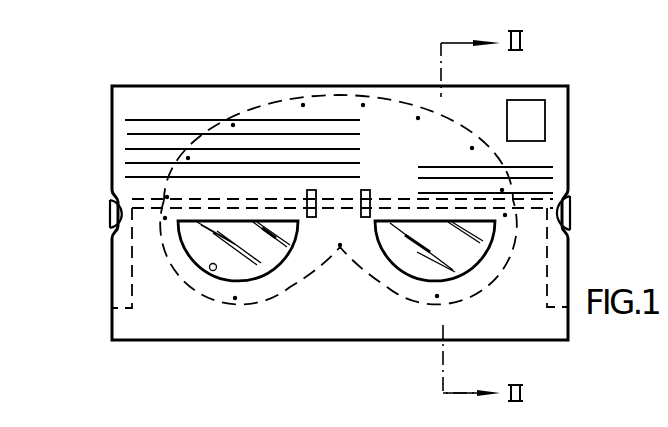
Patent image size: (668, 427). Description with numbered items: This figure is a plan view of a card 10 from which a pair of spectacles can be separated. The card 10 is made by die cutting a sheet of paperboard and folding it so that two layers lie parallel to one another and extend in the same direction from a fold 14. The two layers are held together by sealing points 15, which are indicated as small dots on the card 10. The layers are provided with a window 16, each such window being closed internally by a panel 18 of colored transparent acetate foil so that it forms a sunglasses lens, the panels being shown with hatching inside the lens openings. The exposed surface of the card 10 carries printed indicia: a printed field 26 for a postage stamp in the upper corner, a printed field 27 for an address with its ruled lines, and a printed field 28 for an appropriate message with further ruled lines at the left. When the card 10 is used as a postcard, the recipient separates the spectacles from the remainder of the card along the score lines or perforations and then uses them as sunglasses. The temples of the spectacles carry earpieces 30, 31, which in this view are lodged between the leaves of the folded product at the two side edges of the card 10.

The card 10 is at (101, 340).
The fold 14 is at (243, 304).
The sealing points 15 is at (342, 250).
The window 16 is at (210, 267).
The panel 18 is at (220, 245).
The printed field for a postage stamp 26 is at (540, 121).
The printed field for an address 27 is at (543, 164).
The printed field for a message 28 is at (126, 150).
The earpiece 30 is at (568, 208).
The earpiece 31 is at (108, 215).